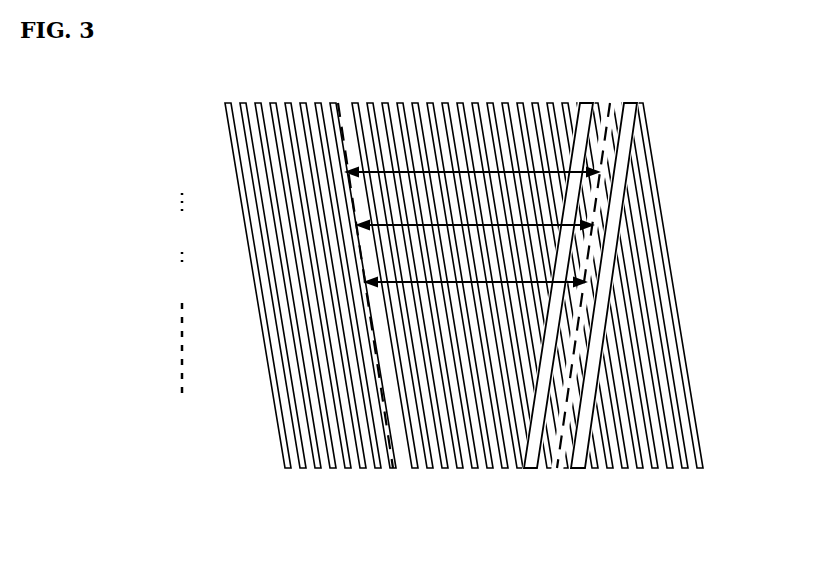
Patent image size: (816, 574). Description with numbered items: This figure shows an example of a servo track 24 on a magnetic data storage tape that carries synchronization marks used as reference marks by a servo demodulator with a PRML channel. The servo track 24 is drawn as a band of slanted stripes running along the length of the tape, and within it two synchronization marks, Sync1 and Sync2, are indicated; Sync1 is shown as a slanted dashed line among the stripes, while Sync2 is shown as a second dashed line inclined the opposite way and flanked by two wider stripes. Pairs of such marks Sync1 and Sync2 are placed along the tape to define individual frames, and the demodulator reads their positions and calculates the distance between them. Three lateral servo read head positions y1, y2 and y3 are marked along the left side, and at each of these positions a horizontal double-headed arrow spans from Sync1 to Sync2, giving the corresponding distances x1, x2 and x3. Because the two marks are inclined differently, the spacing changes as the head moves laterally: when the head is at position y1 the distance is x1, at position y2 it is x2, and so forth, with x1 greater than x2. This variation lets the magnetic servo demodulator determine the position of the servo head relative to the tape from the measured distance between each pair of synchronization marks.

The servo track 24 is at (293, 55).
The first synchronization mark Sync1 is at (396, 492).
The second synchronization mark Sync2 is at (558, 492).
The distance between Sync1 and Sync2 at position y1 x1 is at (533, 165).
The distance between Sync1 and Sync2 at position y2 x2 is at (537, 222).
The distance between Sync1 and Sync2 at position y3 x3 is at (533, 277).
The first servo read head position y1 is at (185, 189).
The second servo read head position y2 is at (187, 247).
The third servo read head position y3 is at (187, 338).